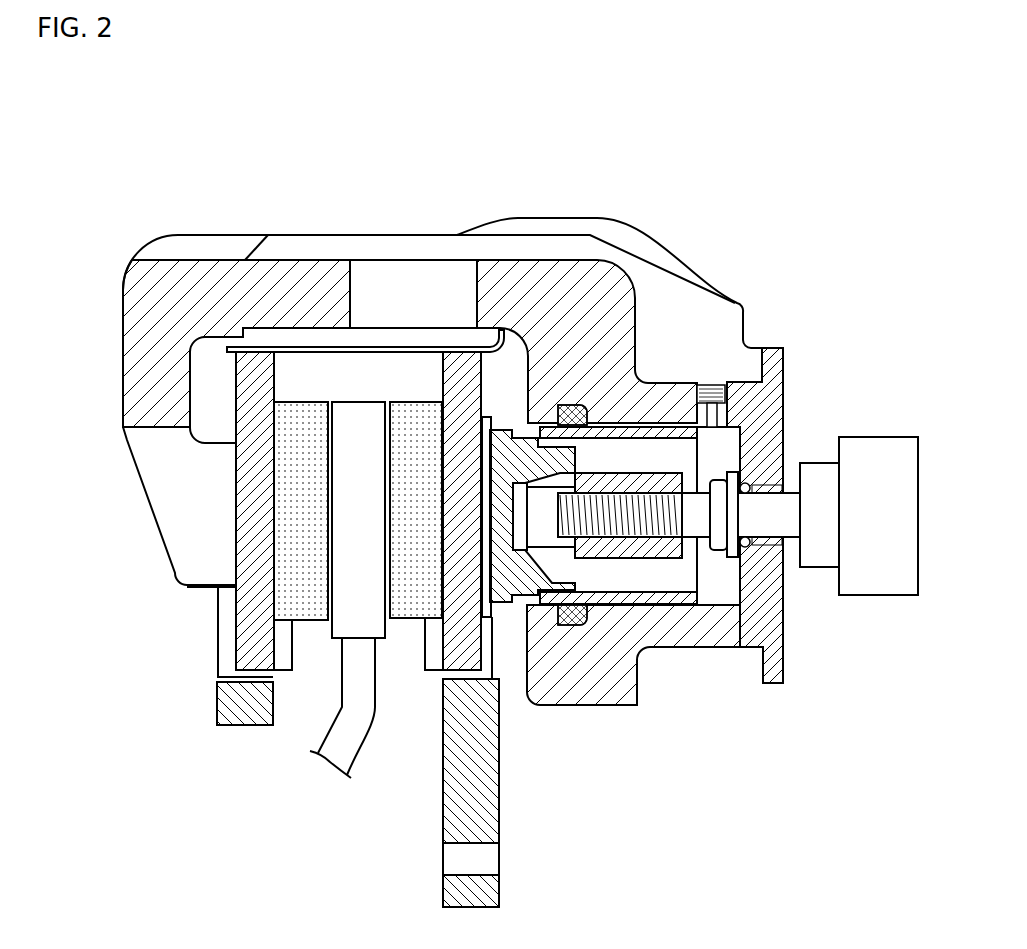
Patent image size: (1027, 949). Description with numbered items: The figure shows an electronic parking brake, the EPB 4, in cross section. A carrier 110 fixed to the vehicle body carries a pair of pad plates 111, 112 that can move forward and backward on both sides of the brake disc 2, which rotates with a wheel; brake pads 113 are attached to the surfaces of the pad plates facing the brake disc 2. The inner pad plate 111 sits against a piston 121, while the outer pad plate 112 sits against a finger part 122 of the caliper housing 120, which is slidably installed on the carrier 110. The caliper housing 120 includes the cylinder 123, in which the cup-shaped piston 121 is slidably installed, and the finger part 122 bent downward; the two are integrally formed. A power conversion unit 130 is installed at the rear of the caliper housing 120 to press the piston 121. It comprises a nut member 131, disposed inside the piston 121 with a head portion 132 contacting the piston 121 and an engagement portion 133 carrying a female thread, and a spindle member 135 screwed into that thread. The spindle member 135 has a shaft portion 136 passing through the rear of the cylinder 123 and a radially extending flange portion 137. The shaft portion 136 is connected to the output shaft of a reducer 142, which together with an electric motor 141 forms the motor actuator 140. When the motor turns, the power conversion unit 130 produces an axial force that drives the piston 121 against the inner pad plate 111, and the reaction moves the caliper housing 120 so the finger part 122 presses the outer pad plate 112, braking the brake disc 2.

The EPB 4 is at (517, 111).
The caliper housing 120 is at (342, 245).
The finger part 122 is at (155, 483).
The cylinder 123 is at (772, 350).
The power conversion unit 130 is at (647, 438).
The nut member 131 is at (586, 648).
The head portion 132 is at (553, 580).
The engagement portion 133 is at (632, 552).
The spindle member 135 is at (750, 650).
The shaft portion 136 is at (750, 560).
The flange portion 137 is at (718, 552).
The motor actuator 140 is at (856, 462).
The electric motor 141 is at (880, 443).
The reducer 142 is at (815, 470).
The carrier 110 is at (455, 822).
The inner pad plate 111 is at (457, 650).
The outer pad plate 112 is at (247, 617).
The brake pads 113 is at (310, 620).
The piston 121 is at (500, 585).
The brake disc 2 is at (347, 742).